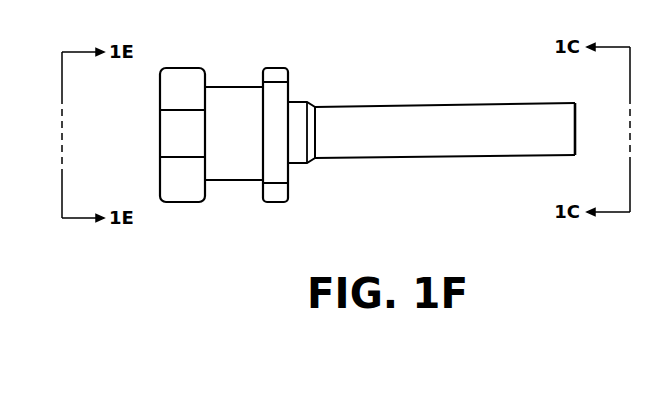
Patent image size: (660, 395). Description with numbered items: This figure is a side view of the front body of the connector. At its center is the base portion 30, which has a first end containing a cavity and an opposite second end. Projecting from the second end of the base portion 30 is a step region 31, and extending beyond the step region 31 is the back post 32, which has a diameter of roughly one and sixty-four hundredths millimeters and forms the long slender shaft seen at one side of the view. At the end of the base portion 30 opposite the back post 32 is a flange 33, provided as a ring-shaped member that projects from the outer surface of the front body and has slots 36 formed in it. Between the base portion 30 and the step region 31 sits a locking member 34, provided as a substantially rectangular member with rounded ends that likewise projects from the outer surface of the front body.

The base portion 30 is at (219, 142).
The step region 31 is at (298, 108).
The back post 32 is at (475, 103).
The flange 33 is at (182, 77).
The locking member 34 is at (278, 73).
The slots 36 is at (151, 133).